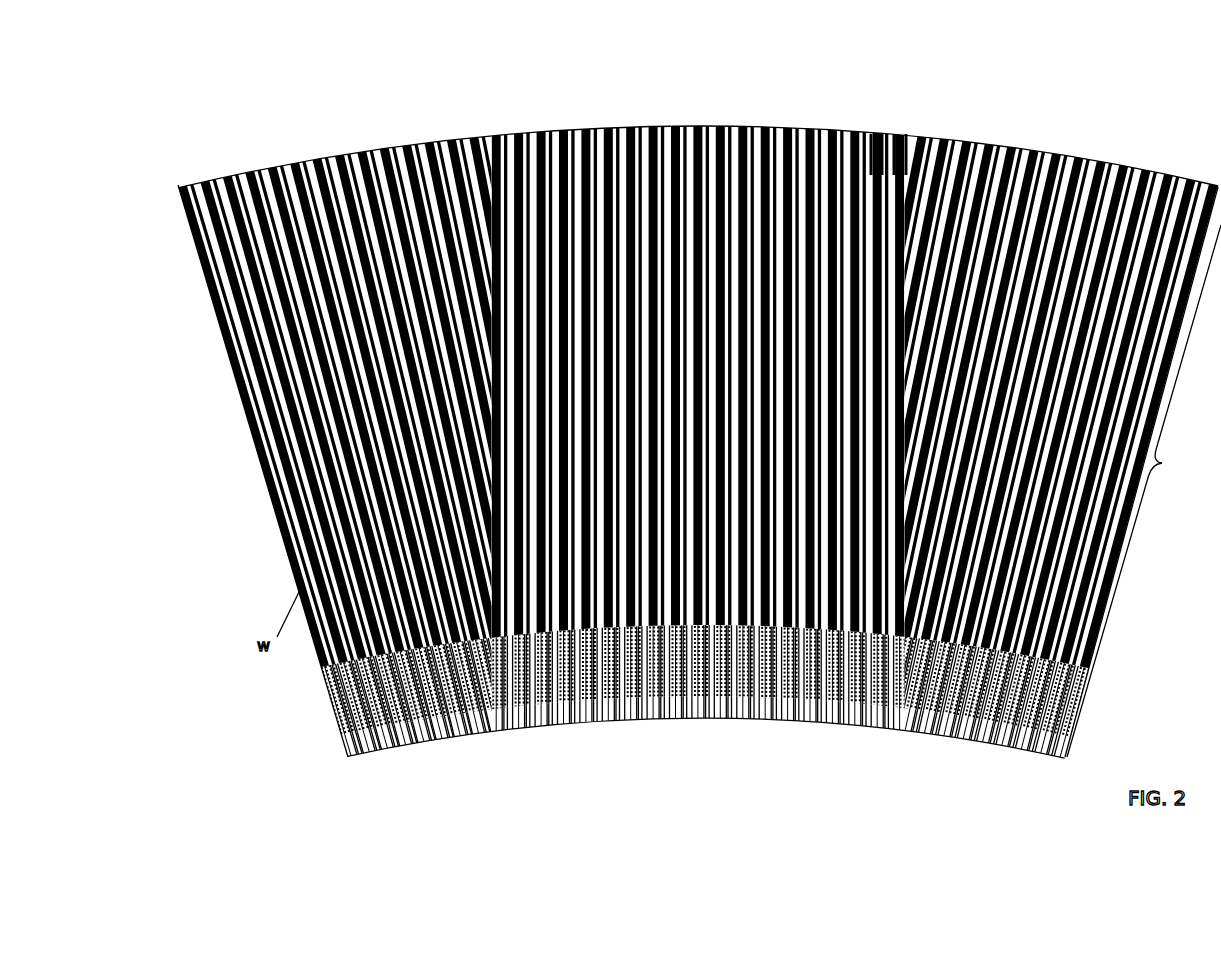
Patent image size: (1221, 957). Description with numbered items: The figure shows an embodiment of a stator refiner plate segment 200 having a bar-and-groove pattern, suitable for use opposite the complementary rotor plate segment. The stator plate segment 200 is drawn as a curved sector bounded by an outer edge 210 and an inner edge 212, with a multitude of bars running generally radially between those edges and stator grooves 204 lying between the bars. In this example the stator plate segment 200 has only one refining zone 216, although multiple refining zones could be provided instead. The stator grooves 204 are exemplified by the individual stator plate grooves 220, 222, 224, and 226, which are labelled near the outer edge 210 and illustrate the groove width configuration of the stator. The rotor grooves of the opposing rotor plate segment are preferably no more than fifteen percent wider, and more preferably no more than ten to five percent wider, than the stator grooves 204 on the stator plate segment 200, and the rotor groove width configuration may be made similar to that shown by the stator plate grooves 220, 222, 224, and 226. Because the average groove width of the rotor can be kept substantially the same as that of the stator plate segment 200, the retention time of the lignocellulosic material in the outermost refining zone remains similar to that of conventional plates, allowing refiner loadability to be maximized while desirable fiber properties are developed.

The stator plate segment 200 is at (236, 150).
The stator grooves 204 is at (272, 483).
The outer edge 210 is at (620, 127).
The inner edge 212 is at (643, 707).
The refining zone 216 is at (1143, 472).
The stator plate groove 220 is at (937, 113).
The stator plate groove 222 is at (929, 94).
The stator plate groove 224 is at (842, 94).
The stator plate groove 226 is at (838, 113).